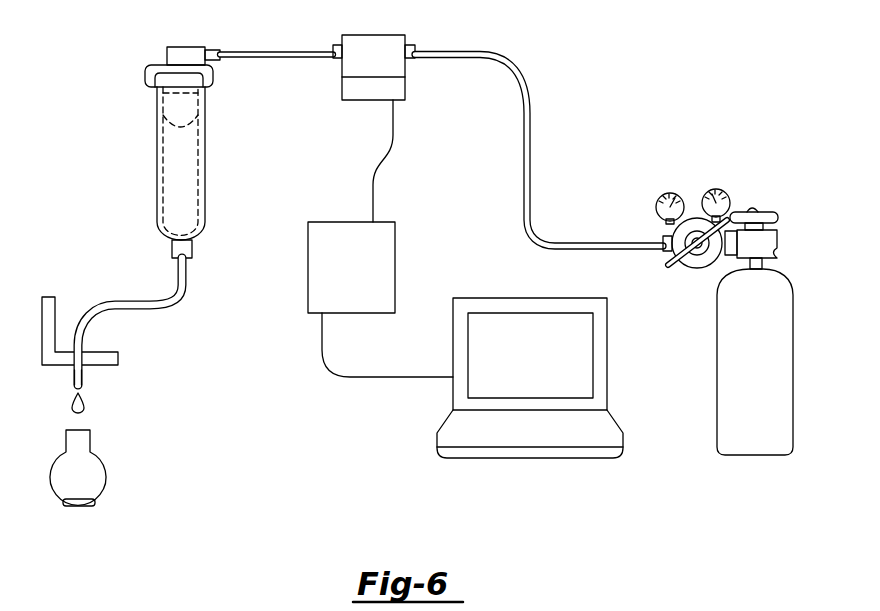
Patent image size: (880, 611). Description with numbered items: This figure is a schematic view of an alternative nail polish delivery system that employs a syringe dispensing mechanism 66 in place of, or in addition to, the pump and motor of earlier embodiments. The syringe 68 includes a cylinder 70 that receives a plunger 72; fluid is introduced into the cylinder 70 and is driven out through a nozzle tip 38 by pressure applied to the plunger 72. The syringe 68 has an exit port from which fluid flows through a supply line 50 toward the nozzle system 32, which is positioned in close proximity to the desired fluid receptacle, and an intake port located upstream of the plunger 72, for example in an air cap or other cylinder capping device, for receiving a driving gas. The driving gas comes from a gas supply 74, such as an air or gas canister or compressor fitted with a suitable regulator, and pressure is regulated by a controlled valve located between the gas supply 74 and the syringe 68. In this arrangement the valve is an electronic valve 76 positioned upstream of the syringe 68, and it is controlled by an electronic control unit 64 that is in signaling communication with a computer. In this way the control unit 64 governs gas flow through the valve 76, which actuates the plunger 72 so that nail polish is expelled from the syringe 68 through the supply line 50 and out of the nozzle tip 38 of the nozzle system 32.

The syringe dispensing mechanism 66 is at (106, 63).
The syringe 68 is at (205, 233).
The cylinder 70 is at (165, 157).
The plunger 72 is at (188, 103).
The electronic valve 76 is at (384, 66).
The electronic control unit 64 is at (362, 279).
The gas supply 74 is at (767, 390).
The nozzle system 32 is at (50, 388).
The supply line 50 is at (122, 300).
The nozzle tip 38 is at (84, 375).